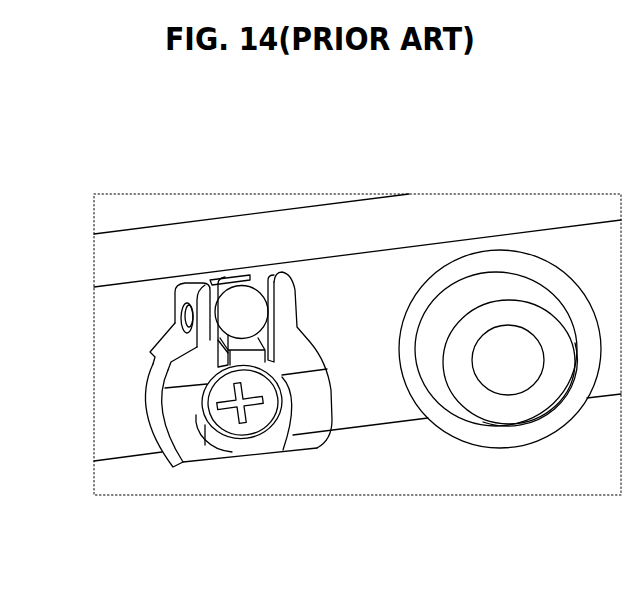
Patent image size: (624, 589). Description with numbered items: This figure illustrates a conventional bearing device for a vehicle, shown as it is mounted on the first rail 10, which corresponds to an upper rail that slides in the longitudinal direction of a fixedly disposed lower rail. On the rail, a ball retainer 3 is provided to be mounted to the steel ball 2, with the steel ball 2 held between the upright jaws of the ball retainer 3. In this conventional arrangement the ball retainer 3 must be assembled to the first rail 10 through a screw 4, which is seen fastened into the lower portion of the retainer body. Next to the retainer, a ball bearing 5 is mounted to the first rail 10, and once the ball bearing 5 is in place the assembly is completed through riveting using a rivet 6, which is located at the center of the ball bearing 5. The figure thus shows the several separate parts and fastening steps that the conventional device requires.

The steel ball 2 is at (241, 303).
The ball retainer 3 is at (190, 373).
The screw 4 is at (230, 425).
The ball bearing 5 is at (514, 287).
The rivet 6 is at (508, 377).
The first rail 10 is at (123, 398).